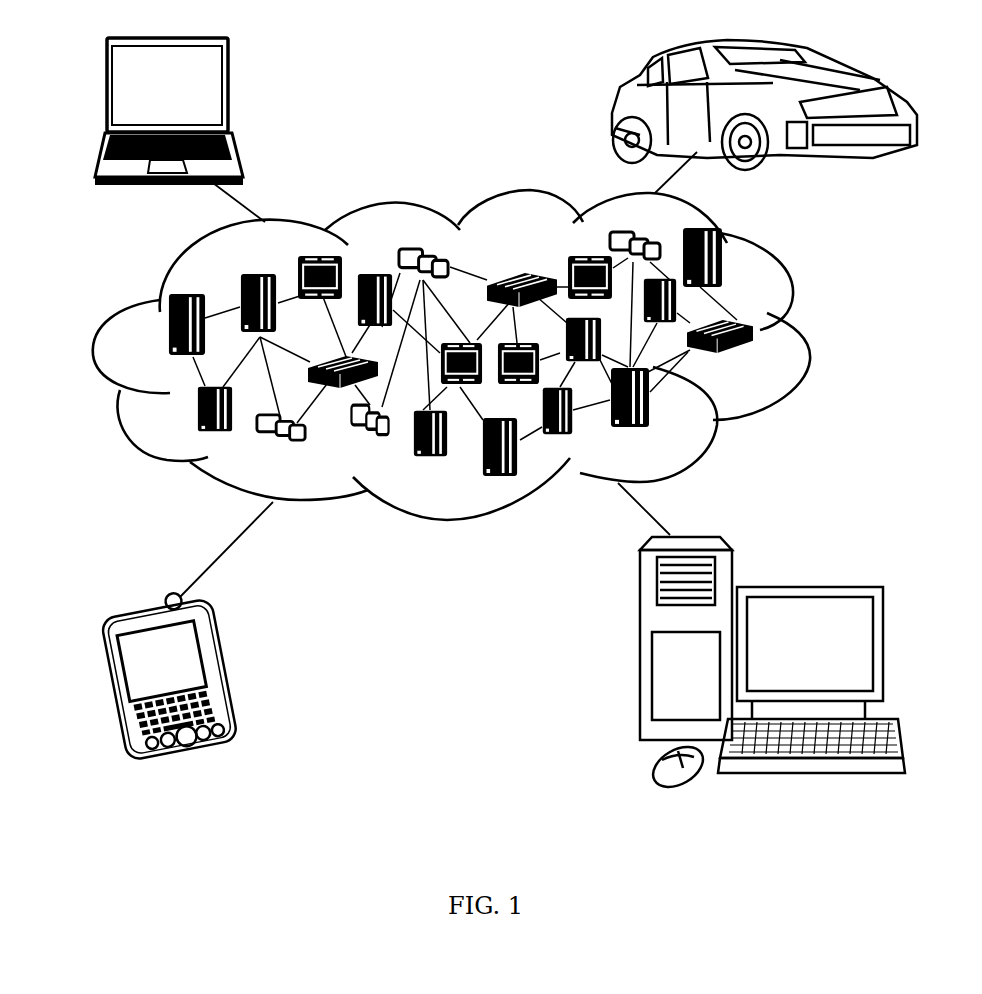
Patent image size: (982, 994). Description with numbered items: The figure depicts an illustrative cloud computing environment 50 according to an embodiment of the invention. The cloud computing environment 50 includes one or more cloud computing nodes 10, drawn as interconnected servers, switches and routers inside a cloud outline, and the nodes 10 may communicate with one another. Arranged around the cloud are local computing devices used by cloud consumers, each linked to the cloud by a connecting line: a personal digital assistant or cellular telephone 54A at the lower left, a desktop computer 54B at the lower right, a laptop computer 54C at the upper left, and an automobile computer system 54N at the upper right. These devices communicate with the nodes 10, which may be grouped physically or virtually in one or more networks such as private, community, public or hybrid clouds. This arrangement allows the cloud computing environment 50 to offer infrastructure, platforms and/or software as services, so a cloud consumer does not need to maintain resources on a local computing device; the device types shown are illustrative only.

The cloud computing nodes 10 is at (760, 362).
The cloud computing environment 50 is at (807, 337).
The personal digital assistant (PDA) or cellular telephone 54A is at (222, 670).
The desktop computer 54B is at (807, 587).
The laptop computer 54C is at (232, 92).
The automobile computer system 54N is at (612, 108).